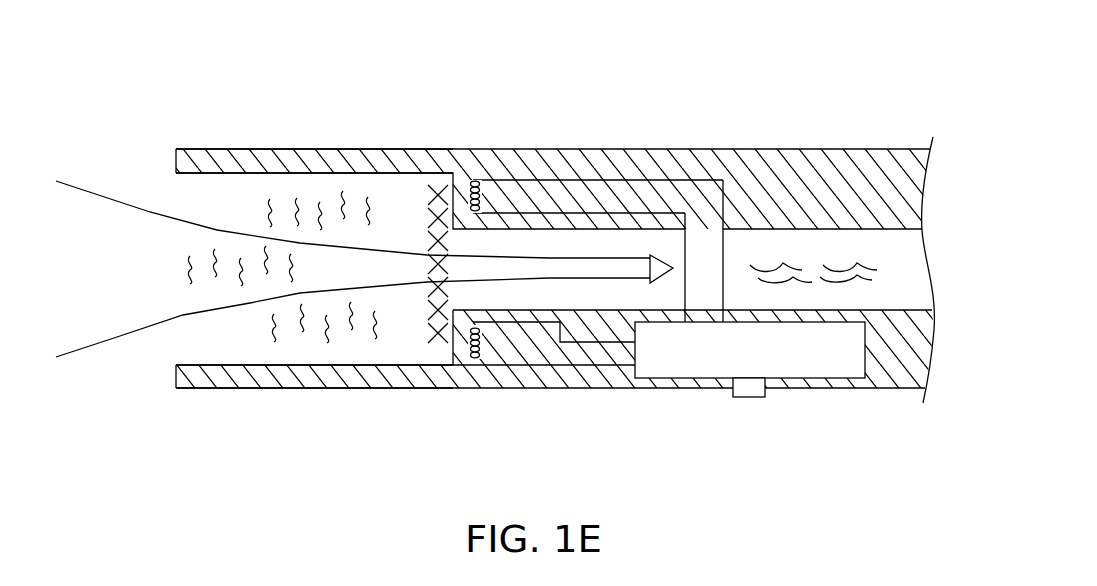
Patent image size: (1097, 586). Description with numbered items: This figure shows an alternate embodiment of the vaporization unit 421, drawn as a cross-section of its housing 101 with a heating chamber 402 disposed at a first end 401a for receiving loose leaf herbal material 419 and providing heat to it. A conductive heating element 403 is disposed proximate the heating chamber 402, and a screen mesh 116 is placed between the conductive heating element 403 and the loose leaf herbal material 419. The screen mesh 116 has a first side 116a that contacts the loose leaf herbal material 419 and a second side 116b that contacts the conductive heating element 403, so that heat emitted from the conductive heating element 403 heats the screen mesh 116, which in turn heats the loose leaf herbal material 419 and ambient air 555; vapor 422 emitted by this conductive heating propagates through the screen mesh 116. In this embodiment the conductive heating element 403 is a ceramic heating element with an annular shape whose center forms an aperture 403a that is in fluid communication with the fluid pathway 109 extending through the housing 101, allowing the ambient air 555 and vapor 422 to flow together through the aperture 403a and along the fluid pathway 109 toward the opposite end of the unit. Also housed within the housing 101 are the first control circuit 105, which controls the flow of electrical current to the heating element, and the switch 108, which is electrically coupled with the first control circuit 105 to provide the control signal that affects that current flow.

The first housing 101 is at (650, 150).
The first control circuit 105 is at (820, 368).
The switch 108 is at (752, 400).
The fluid pathway 109 is at (798, 245).
The screen mesh 116 is at (440, 347).
The first side 116a is at (428, 342).
The second side 116b is at (452, 202).
The first end 401a is at (175, 375).
The heating chamber 402 is at (190, 194).
The conductive heating element 403 is at (472, 180).
The aperture 403a is at (437, 292).
The loose leaf herbal material 419 is at (322, 202).
The vaporization unit 421 is at (701, 100).
The vapor 422 is at (838, 268).
The ambient air 555 is at (78, 193).